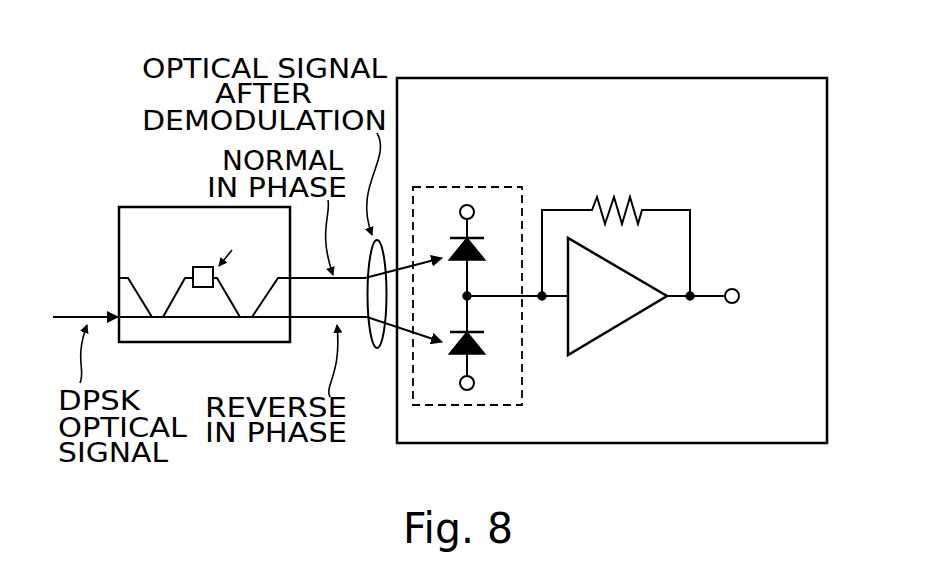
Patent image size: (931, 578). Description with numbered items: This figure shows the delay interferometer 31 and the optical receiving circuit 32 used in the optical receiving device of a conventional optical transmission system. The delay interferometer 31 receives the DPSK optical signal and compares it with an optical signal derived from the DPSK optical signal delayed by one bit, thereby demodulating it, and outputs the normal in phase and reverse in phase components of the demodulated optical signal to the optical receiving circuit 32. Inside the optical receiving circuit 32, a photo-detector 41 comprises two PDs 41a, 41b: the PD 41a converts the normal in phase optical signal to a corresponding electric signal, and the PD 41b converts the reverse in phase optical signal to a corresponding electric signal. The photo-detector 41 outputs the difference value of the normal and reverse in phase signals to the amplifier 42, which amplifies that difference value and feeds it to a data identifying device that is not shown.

The delay interferometer 31 is at (143, 207).
The optical receiving circuit 32 is at (741, 78).
The photo-detector 41 is at (505, 263).
The PD 41a is at (487, 230).
The PD 41b is at (487, 357).
The amplifier 42 is at (619, 335).